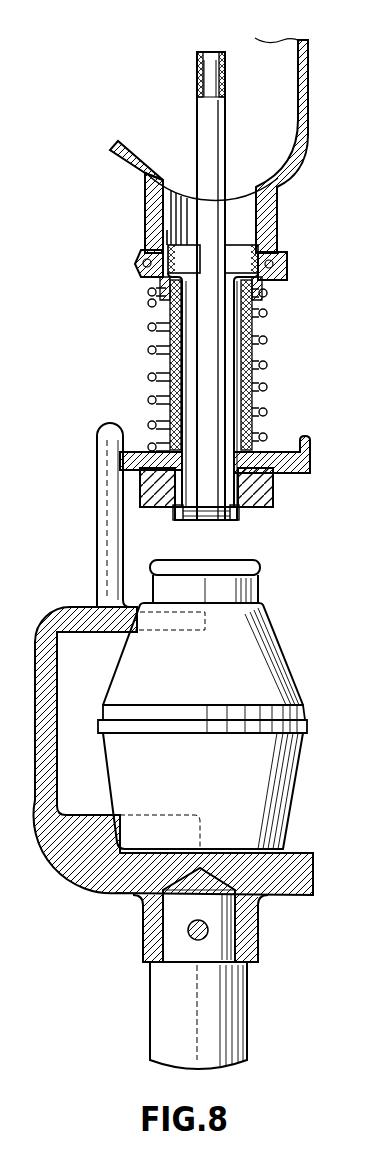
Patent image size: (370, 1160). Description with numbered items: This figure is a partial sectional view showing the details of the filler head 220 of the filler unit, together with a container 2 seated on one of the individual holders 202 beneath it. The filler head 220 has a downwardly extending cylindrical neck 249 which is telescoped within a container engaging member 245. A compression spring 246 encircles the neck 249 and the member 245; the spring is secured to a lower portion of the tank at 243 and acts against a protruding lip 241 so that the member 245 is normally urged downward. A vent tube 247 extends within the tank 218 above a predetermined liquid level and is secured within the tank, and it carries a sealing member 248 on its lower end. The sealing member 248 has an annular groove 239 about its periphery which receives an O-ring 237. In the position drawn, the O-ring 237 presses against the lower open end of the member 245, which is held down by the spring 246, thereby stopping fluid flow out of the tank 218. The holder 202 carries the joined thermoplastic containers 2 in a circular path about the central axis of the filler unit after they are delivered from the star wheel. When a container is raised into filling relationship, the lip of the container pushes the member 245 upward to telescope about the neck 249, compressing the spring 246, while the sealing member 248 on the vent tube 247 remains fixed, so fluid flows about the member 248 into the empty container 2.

The thermoplastic container 2 is at (286, 668).
The holder 202 is at (70, 852).
The tank 218 is at (283, 55).
The filler head 220 is at (112, 243).
The O-ring 237 is at (240, 518).
The annular groove 239 is at (200, 520).
The protruding lip 241 is at (311, 458).
The spring securing portion of the tank 243 is at (287, 272).
The container engaging member 245 is at (168, 388).
The compression spring 246 is at (152, 329).
The vent tube 247 is at (234, 237).
The sealing member 248 is at (177, 520).
The cylindrical neck 249 is at (252, 320).